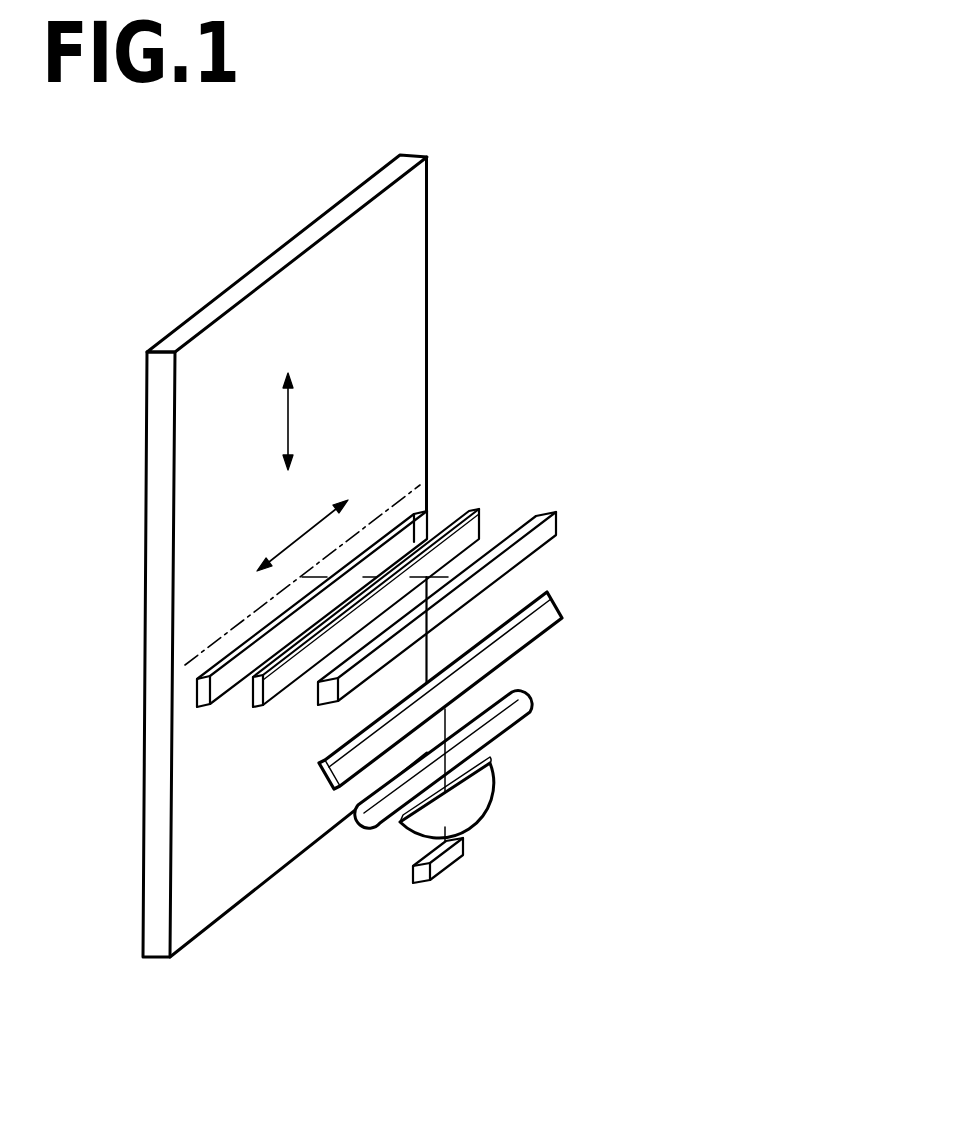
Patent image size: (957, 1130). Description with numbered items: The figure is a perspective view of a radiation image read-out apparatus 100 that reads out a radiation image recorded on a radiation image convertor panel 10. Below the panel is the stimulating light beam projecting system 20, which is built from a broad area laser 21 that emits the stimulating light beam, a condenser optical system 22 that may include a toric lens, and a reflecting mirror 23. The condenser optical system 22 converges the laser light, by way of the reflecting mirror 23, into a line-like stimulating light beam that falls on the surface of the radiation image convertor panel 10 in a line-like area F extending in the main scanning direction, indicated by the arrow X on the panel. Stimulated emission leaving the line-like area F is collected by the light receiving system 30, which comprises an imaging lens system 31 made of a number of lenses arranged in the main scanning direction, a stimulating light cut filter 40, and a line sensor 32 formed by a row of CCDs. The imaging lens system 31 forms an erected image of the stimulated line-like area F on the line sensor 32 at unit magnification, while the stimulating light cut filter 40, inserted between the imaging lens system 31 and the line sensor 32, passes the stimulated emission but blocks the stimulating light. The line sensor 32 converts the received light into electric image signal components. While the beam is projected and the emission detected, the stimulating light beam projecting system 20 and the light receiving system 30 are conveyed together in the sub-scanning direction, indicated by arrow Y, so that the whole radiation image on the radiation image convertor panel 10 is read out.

The radiation image read-out apparatus 100 is at (462, 556).
The radiation image convertor panel 10 is at (413, 236).
The line-like area F is at (203, 652).
The light receiving system 30 is at (403, 527).
The imaging lens system 31 is at (428, 527).
The stimulating light cut filter 40 is at (480, 527).
The line sensor 32 is at (445, 403).
The stimulating light beam projecting system 20 is at (524, 745).
The reflecting mirror 23 is at (558, 602).
The condenser optical system 22 is at (560, 688).
The broad area laser 21 is at (531, 863).